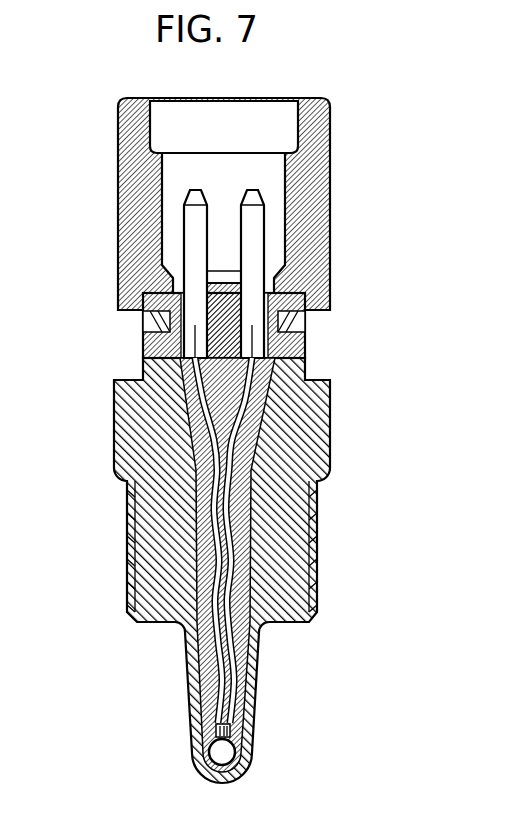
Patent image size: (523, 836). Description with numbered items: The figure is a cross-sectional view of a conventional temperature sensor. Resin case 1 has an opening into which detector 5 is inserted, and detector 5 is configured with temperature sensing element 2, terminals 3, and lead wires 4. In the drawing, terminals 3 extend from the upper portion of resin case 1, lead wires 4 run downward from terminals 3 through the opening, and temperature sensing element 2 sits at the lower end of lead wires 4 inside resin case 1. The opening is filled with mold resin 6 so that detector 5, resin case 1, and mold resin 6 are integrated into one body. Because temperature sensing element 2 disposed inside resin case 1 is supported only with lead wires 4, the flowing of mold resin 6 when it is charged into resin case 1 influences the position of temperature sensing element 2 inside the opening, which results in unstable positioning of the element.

The resin case 1 is at (148, 413).
The temperature sensing element 2 is at (234, 742).
The terminals 3 is at (252, 248).
The lead wires 4 is at (224, 497).
The detector 5 is at (392, 283).
The mold resin 6 is at (217, 466).